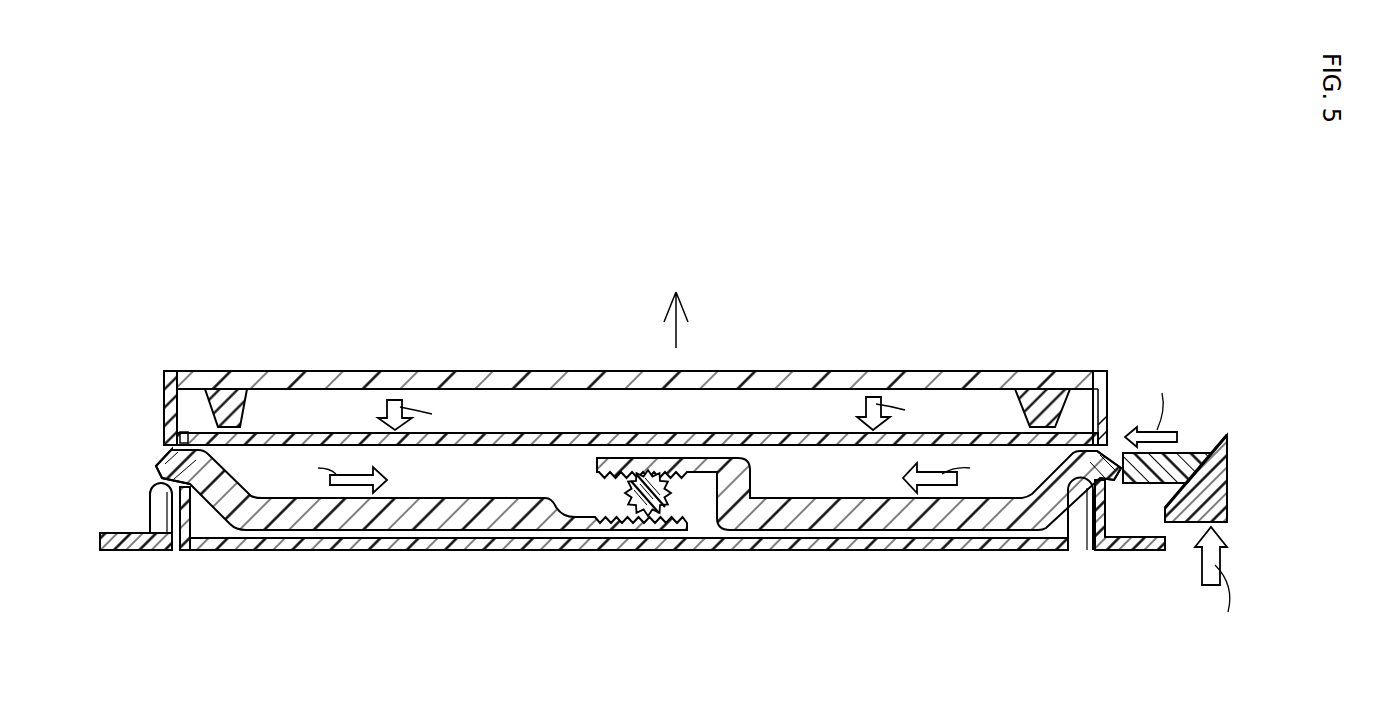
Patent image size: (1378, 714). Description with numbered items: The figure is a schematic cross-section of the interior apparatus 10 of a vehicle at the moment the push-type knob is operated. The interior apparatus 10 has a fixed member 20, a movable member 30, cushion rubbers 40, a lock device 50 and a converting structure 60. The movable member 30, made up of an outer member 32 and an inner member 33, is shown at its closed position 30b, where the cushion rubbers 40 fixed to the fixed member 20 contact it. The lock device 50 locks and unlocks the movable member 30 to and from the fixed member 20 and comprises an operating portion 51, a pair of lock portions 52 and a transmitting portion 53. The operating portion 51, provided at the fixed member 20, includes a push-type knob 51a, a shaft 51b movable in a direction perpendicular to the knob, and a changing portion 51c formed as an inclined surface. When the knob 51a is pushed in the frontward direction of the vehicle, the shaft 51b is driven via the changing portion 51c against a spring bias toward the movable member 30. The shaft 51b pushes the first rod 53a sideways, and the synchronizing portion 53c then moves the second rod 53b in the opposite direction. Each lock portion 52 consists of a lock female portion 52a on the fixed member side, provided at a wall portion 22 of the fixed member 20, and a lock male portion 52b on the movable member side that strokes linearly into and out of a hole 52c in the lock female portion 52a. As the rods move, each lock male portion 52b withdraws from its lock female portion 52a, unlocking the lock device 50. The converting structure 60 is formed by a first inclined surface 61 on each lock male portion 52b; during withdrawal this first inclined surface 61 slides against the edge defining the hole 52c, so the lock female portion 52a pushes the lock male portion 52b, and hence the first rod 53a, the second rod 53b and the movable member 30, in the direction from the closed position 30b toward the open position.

The interior apparatus 10 is at (527, 367).
The fixed member 20 is at (760, 380).
The wall portion 22 is at (172, 405).
The inner member 33 is at (527, 431).
The cushion rubber 40 is at (238, 410).
The converting structure 60 is at (638, 393).
The first inclined surface 61 is at (181, 450).
The movable member 30 is at (629, 575).
The closed position 30b is at (837, 543).
The outer member 32 is at (788, 542).
The lock portion 52 is at (641, 546).
The lock female portion 52a is at (149, 485).
The hole 52c is at (610, 543).
The lock male portion 52b is at (190, 475).
The transmitting portion 53 is at (638, 528).
The first rod 53a is at (942, 523).
The second rod 53b is at (463, 518).
The synchronizing portion 53c is at (658, 517).
The lock device 50 is at (1227, 500).
The operating portion 51 is at (1227, 432).
The push-type knob 51a is at (1227, 450).
The shaft 51b is at (1182, 452).
The changing portion 51c is at (1200, 450).